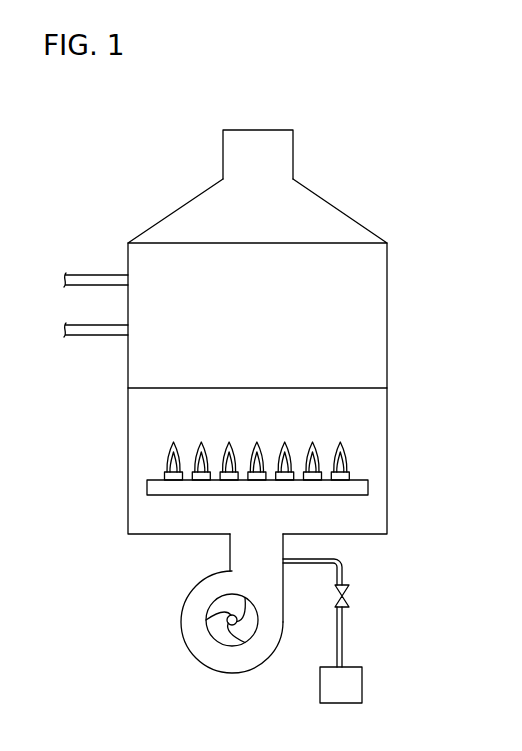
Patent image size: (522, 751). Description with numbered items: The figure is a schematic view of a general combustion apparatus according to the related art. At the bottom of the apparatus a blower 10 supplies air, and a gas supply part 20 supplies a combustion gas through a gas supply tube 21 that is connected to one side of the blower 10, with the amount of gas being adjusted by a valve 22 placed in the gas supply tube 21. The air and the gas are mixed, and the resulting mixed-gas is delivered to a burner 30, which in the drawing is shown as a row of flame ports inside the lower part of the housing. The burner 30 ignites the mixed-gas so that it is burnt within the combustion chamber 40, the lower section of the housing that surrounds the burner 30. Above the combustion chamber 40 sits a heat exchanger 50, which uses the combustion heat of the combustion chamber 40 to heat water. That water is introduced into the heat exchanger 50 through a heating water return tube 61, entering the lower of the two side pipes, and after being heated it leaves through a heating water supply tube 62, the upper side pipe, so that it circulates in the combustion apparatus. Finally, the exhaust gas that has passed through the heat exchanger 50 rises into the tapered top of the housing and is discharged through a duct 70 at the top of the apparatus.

The blower 10 is at (213, 625).
The gas supply part 20 is at (362, 686).
The gas supply tube 21 is at (343, 637).
The valve 22 is at (345, 595).
The burner 30 is at (368, 490).
The combustion chamber 40 is at (372, 415).
The heat exchanger 50 is at (365, 309).
The heating water return tube 61 is at (90, 331).
The heating water supply tube 62 is at (95, 278).
The duct 70 is at (284, 147).